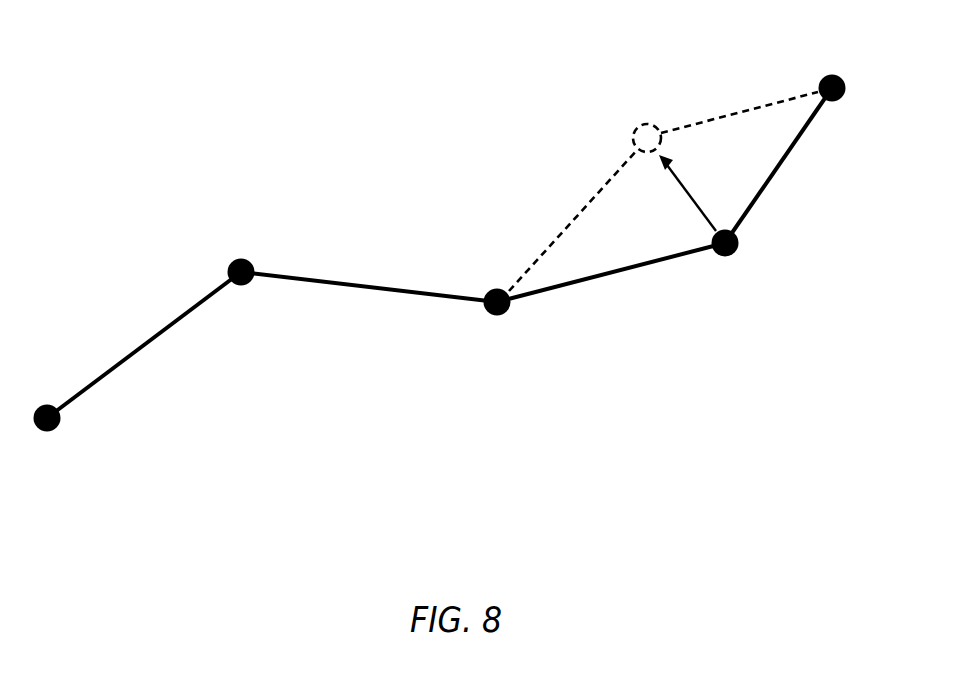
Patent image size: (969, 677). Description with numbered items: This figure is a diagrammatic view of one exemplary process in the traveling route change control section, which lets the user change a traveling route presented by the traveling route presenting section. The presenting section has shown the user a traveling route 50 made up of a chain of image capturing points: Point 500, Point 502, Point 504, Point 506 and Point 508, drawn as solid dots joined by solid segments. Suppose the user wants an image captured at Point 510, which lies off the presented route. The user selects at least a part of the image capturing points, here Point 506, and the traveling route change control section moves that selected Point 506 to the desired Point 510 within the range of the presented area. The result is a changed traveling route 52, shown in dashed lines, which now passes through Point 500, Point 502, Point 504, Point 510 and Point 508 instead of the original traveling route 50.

The traveling route 50 is at (778, 170).
The traveling route 52 is at (740, 112).
The Point 500 is at (48, 432).
The Point 502 is at (244, 286).
The Point 504 is at (500, 316).
The Point 506 is at (728, 257).
The Point 508 is at (834, 102).
The Point 510 is at (646, 123).